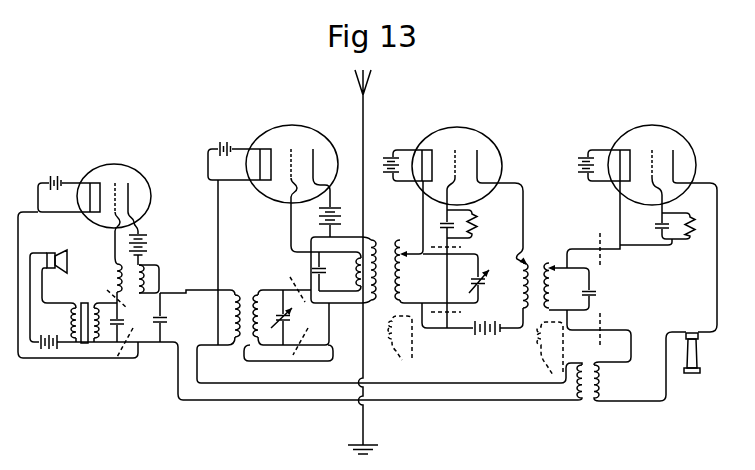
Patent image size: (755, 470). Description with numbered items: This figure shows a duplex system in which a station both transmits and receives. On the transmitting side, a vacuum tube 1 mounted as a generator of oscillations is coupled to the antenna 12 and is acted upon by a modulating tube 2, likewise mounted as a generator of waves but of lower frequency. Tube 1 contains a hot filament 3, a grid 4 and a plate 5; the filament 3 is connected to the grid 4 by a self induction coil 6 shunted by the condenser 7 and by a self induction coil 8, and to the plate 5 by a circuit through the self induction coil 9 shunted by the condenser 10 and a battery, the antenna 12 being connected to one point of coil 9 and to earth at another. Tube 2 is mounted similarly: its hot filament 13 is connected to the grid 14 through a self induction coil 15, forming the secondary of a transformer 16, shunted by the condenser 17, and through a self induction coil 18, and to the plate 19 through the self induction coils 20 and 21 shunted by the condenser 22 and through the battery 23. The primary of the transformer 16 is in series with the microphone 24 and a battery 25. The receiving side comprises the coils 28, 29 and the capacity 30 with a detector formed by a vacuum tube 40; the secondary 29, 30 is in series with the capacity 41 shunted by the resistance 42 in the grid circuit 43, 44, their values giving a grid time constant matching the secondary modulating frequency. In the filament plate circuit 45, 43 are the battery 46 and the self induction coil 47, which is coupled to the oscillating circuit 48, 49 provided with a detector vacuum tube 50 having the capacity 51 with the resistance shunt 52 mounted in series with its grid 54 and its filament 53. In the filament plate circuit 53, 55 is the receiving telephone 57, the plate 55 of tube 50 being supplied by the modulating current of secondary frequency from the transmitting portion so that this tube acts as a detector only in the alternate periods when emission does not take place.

The vacuum tube 1 is at (325, 137).
The modulating tube 2 is at (140, 175).
The hot filament 3 is at (241, 157).
The grid 4 is at (303, 193).
The plate 5 is at (325, 185).
The self induction coil 6 is at (291, 317).
The condenser 7 is at (287, 317).
The self induction coil 8 is at (340, 271).
The self induction coil 9 is at (366, 259).
The condenser 10 is at (311, 271).
The antenna 12 is at (371, 262).
The hot filament 13 is at (74, 189).
The grid 14 is at (117, 215).
The self induction coil 15 is at (108, 351).
The transformer 16 is at (94, 314).
The condenser 17 is at (119, 322).
The self induction coil 18 is at (109, 278).
The plate 19 is at (132, 200).
The self induction coil 20 is at (228, 313).
The self induction coil 21 is at (150, 279).
The condenser 22 is at (172, 317).
The battery 23 is at (149, 250).
The microphone 24 is at (53, 288).
The battery 25 is at (47, 332).
The coil 28 is at (371, 302).
The secondary coil 29 is at (408, 270).
The capacity 30 is at (453, 278).
The vacuum tube 40 is at (492, 141).
The capacity 41 is at (441, 217).
The resistance 42 is at (473, 224).
The filament 43 is at (412, 196).
The grid 44 is at (447, 231).
The plate 45 is at (497, 199).
The battery 46 is at (472, 329).
The self induction coil 47 is at (514, 285).
The oscillating circuit coil 48 is at (559, 285).
The oscillating circuit capacity 49 is at (582, 287).
The vacuum tube 50 is at (621, 141).
The capacity 51 is at (662, 226).
The resistance shunt 52 is at (668, 229).
The filament 53 is at (608, 158).
The grid 54 is at (652, 174).
The plate 55 is at (691, 233).
The receiving telephone 57 is at (702, 353).